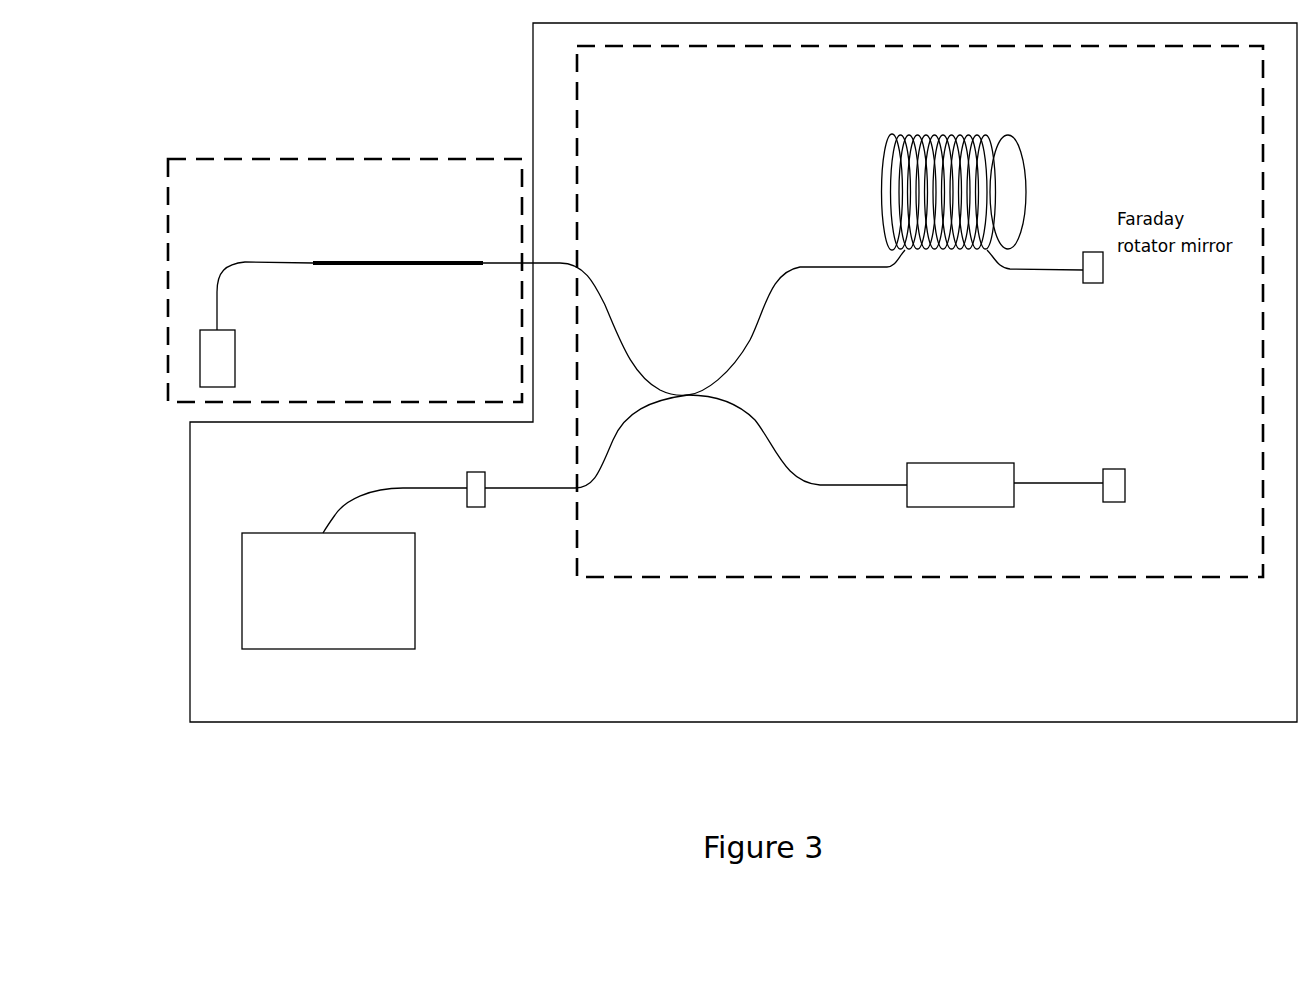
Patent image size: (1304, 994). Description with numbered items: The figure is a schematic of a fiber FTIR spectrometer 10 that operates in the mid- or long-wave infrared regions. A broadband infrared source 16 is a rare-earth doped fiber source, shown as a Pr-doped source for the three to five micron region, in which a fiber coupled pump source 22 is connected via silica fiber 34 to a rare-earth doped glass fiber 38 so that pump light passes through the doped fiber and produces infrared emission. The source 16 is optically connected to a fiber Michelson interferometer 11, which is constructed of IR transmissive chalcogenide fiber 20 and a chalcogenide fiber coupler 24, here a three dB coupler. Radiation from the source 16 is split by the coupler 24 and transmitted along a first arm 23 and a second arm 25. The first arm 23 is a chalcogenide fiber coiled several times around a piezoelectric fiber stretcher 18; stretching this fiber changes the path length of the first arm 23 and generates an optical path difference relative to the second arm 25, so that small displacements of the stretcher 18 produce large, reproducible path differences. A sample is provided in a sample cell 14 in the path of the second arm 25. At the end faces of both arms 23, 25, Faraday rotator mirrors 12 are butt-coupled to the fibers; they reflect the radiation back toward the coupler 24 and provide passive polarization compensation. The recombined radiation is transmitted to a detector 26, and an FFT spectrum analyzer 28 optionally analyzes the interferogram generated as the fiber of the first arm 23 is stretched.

The fiber FTIR spectrometer 10 is at (277, 723).
The interferometer 11 is at (667, 578).
The Faraday rotator mirror 12 is at (1117, 495).
The sample cell 14 is at (998, 490).
The broadband infrared source 16 is at (322, 157).
The piezoelectric fiber stretcher 18 is at (953, 247).
The chalcogenide fiber 20 is at (603, 302).
The fiber coupled pump source 22 is at (213, 357).
The first arm 23 is at (563, 248).
The chalcogenide fiber coupler 24 is at (687, 402).
The second arm 25 is at (555, 500).
The detector 26 is at (468, 480).
The FFT spectrum analyzer 28 is at (255, 632).
The silica fiber 34 is at (263, 262).
The rare-earth doped glass fiber 38 is at (330, 262).